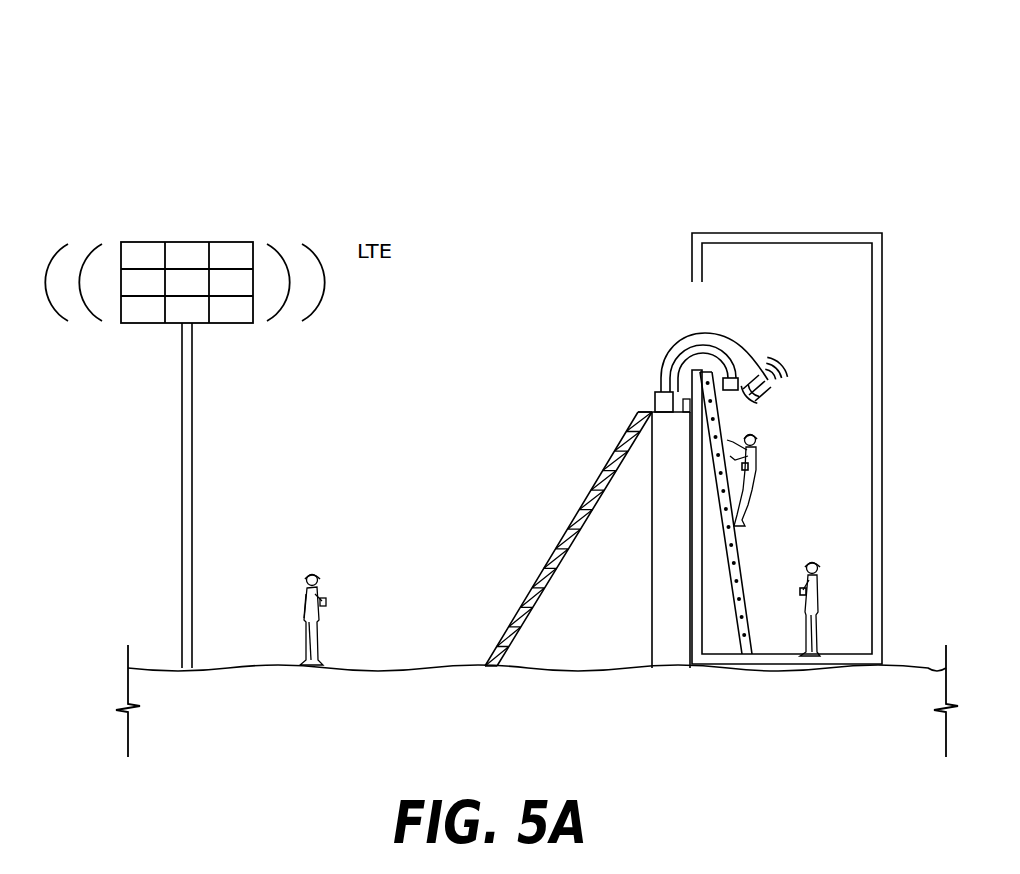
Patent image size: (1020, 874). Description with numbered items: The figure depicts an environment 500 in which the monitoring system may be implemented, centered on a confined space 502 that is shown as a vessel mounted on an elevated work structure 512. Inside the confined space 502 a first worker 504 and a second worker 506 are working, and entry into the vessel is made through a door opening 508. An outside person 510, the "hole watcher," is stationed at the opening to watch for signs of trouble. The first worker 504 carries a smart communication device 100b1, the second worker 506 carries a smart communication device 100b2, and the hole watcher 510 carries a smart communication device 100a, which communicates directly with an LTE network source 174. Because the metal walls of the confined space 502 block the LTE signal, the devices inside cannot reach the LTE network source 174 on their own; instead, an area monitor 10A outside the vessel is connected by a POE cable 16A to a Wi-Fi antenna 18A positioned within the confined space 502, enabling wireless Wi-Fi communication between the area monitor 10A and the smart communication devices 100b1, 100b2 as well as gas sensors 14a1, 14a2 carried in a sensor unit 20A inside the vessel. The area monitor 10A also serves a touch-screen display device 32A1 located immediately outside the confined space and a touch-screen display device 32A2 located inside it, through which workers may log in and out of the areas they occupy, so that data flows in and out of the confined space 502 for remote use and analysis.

The environment 500 is at (664, 71).
The confined space 502 is at (860, 273).
The first worker 504 is at (771, 431).
The second worker 506 is at (818, 566).
The door opening 508 is at (709, 294).
The outside person 510 is at (290, 590).
The elevated work structure 512 is at (608, 424).
The LTE network source 174 is at (193, 428).
The area monitor 10A is at (657, 392).
The POE cable 16A is at (680, 340).
The Wi-Fi antenna 18A is at (768, 366).
The sensor unit 20A is at (710, 350).
The gas sensor 14a1 is at (748, 443).
The gas sensor 14a2 is at (777, 567).
The touch-screen display device 32A1 is at (687, 414).
The touch-screen display device 32A2 is at (768, 640).
The smart communication device 100a is at (326, 599).
The smart communication device 100b1 is at (784, 481).
The smart communication device 100b2 is at (770, 644).